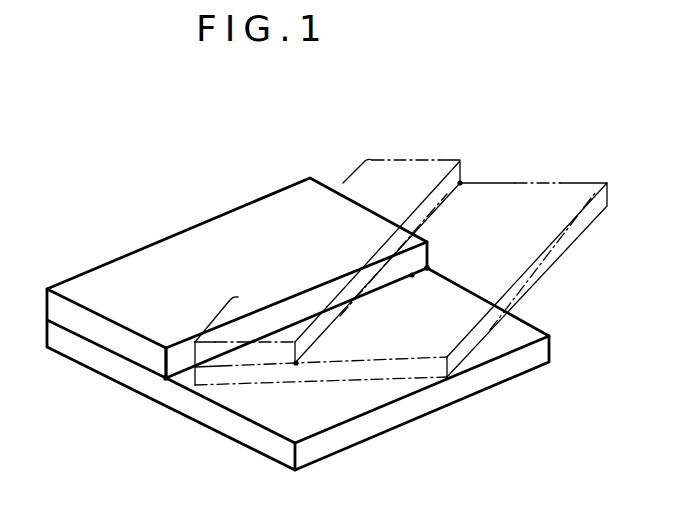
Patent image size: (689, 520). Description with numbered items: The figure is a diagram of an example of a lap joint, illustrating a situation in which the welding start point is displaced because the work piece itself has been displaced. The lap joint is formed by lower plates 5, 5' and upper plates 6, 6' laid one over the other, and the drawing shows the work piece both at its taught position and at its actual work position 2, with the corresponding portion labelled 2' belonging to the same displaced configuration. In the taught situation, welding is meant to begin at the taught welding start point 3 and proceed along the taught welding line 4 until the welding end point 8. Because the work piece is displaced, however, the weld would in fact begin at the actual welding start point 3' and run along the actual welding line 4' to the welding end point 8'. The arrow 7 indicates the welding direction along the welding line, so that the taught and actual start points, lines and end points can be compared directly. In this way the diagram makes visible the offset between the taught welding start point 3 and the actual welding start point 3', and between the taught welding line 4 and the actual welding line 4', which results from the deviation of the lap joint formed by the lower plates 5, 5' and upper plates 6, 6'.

The actual work position 2 is at (410, 284).
The first plate 2' is at (298, 413).
The taught welding start point 3 is at (289, 396).
The actual welding start point 3' is at (140, 422).
The taught welding line 4 is at (377, 232).
The actual welding line 4' is at (296, 323).
The lower plate 5 is at (533, 157).
The lower plate 5' is at (357, 387).
The upper plate 6 is at (327, 228).
The upper plate 6' is at (237, 262).
The arrow indicating welding direction 7 is at (180, 366).
The welding end point 8 is at (477, 145).
The welding end point 8' is at (463, 256).